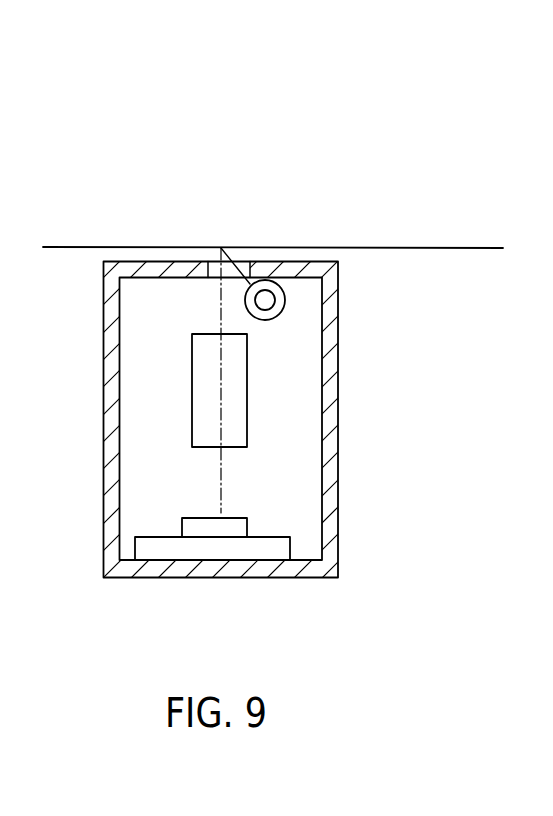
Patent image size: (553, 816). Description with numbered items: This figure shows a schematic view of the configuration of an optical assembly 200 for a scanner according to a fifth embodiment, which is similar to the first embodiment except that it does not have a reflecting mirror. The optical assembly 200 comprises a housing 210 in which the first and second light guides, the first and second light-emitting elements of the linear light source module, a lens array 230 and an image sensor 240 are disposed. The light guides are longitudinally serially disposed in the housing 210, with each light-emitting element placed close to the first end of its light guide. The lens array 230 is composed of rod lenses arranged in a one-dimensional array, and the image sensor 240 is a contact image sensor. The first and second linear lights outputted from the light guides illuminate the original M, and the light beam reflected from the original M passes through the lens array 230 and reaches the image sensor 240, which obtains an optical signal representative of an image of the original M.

The optical assembly 200 is at (258, 94).
The original M is at (467, 248).
The housing 210 is at (107, 456).
The lens array 230 is at (243, 377).
The image sensor 240 is at (243, 527).